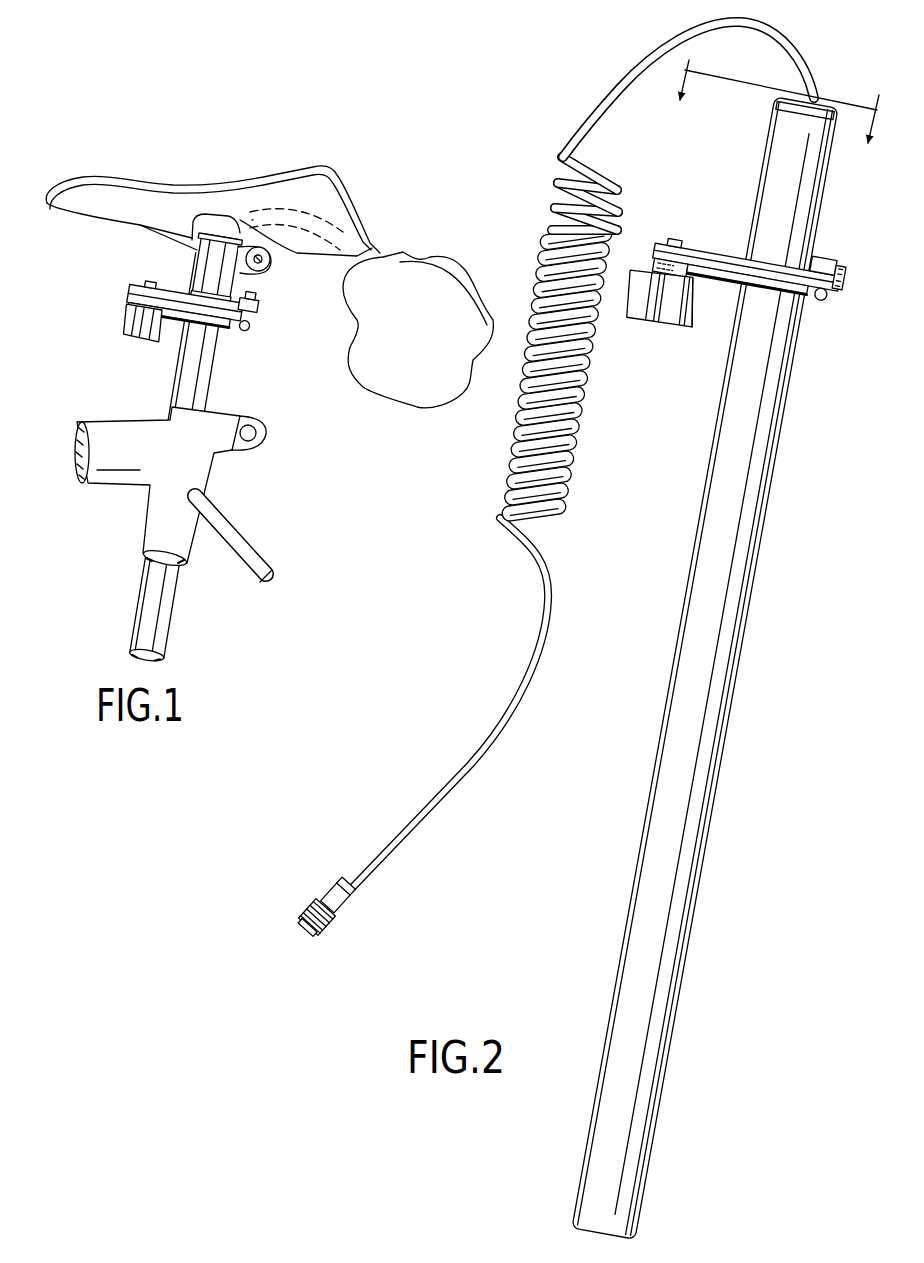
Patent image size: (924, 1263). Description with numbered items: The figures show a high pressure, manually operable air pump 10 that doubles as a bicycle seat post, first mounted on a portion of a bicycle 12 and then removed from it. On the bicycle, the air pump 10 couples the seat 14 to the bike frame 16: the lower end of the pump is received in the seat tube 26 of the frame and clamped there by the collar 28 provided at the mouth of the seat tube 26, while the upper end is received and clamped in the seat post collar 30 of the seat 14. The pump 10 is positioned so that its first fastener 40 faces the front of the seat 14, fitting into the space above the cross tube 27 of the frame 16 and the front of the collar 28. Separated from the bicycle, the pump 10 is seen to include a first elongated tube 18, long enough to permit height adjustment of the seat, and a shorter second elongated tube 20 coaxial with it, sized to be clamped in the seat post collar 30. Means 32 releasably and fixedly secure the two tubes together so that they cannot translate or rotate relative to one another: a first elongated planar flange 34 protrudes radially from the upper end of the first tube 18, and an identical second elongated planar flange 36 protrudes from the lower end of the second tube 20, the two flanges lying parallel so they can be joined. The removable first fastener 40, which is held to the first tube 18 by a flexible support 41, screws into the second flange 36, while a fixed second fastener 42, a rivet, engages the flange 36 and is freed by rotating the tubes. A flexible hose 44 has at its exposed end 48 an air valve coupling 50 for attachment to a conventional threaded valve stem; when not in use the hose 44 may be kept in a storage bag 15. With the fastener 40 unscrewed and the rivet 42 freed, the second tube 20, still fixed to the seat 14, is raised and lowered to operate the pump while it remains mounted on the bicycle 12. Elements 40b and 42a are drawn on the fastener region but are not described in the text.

In FIG. 1, the air pump 10 is at (226, 347).
In FIG. 2, the air pump 10 is at (561, 796).
In FIG. 1, the bicycle 12 is at (113, 380).
In FIG. 1, the seat 14 is at (334, 170).
In FIG. 1, the storage bag 15 is at (412, 260).
In FIG. 1, the bike frame 16 is at (218, 478).
In FIG. 1, the first elongated tube 18 is at (190, 381).
In FIG. 2, the first elongated tube 18 is at (667, 763).
In FIG. 1, the second elongated tube 20 is at (212, 277).
In FIG. 2, the second elongated tube 20 is at (772, 176).
In FIG. 1, the seat tube 26 is at (182, 479).
In FIG. 1, the cross tube 27 is at (113, 430).
In FIG. 1, the collar 28 is at (240, 413).
In FIG. 1, the seat post collar 30 is at (257, 273).
In FIG. 1, the means for releasably fixedly securing 32 is at (172, 315).
In FIG. 2, the means for releasably fixedly securing 32 is at (735, 286).
In FIG. 2, the first elongated planar flange 34 is at (839, 277).
In FIG. 1, the second elongated planar flange 36 is at (185, 302).
In FIG. 2, the second elongated planar flange 36 is at (747, 267).
In FIG. 1, the first removable fastener 40 is at (115, 285).
In FIG. 2, the first removable fastener 40 is at (661, 297).
In FIG. 2, the nut face 40b is at (692, 302).
In FIG. 2, the flexible support 41 is at (747, 279).
In FIG. 2, the second fixed fastener 42 is at (821, 294).
In FIG. 2, the nut 42a is at (823, 265).
In FIG. 1, the flexible hose 44 is at (345, 222).
In FIG. 2, the flexible hose 44 is at (639, 57).
In FIG. 2, the exposed end 48 is at (350, 872).
In FIG. 2, the air valve coupling 50 is at (310, 899).